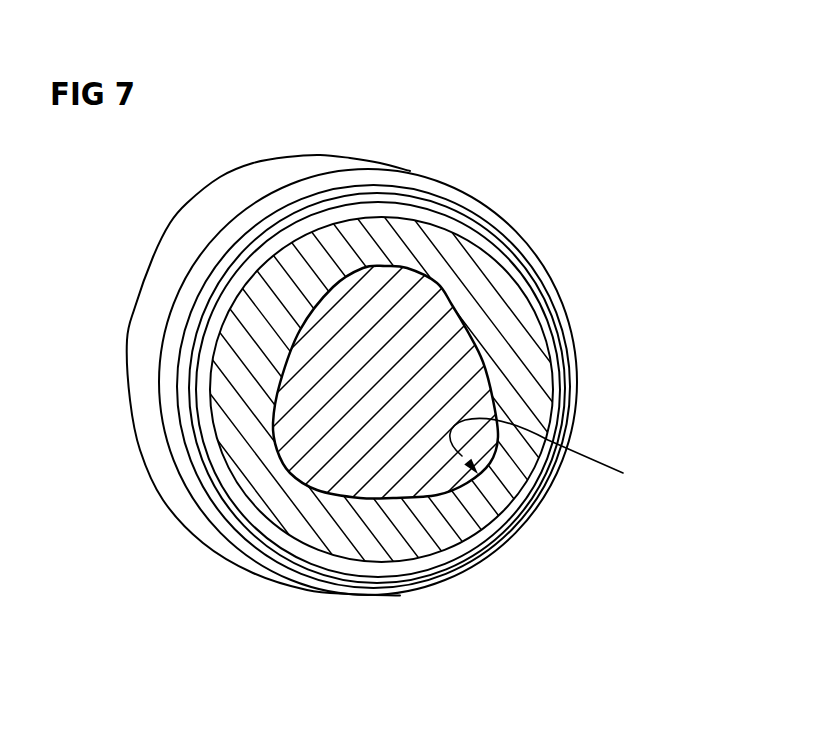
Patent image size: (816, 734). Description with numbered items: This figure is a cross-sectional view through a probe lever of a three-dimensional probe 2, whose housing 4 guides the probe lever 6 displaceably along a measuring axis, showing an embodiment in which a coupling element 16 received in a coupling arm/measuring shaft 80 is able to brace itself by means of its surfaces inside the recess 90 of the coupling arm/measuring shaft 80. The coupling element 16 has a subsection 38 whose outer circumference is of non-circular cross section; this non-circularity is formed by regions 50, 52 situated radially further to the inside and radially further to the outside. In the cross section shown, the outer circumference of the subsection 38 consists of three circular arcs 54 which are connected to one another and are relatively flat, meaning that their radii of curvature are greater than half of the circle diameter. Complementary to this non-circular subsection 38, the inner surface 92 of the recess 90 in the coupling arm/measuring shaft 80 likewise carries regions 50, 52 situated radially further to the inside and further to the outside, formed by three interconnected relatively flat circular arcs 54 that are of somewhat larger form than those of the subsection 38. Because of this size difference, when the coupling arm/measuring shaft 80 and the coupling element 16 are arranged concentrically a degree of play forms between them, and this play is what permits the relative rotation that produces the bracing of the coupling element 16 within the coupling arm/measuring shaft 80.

The 3D probe 2 is at (379, 339).
The housing 4 is at (379, 339).
The probe lever 6 is at (513, 164).
The coupling element 16 is at (430, 347).
The subsection 38 is at (428, 320).
The region situated radially further to the inside 50 is at (383, 434).
The region situated radially further to the outside 52 is at (384, 267).
The circular arcs 54 is at (307, 330).
The coupling arm/measuring shaft 80 is at (530, 365).
The recess 90 is at (570, 453).
The inner surface 92 is at (570, 453).